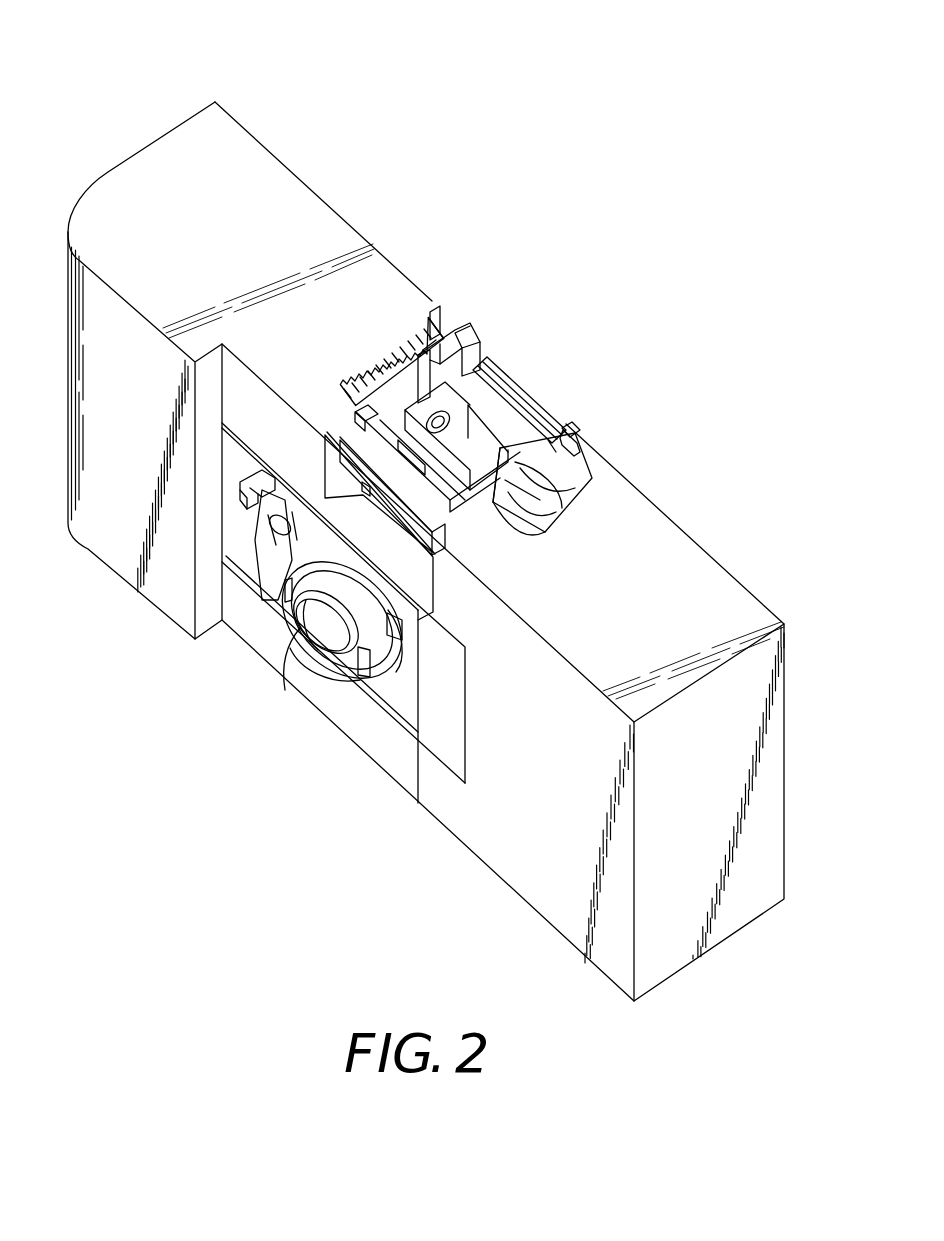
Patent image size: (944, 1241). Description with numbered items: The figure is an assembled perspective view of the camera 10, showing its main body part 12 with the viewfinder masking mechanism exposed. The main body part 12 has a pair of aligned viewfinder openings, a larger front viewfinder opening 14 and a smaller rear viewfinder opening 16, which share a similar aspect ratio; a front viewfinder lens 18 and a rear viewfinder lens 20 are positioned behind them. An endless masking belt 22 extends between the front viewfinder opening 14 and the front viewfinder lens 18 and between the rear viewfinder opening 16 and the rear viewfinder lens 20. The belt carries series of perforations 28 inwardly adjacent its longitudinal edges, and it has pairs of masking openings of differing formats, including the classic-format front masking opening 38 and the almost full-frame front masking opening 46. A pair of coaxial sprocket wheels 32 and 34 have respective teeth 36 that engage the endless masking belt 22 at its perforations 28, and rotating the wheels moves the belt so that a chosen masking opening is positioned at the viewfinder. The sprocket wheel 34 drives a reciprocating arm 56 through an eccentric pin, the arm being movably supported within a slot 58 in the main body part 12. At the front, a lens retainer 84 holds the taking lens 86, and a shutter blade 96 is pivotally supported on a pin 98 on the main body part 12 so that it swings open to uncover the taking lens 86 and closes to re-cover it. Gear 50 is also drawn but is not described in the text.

The camera 10 is at (192, 78).
The main body part 12 is at (150, 145).
The front viewfinder opening 14 is at (342, 470).
The rear viewfinder opening 16 is at (485, 362).
The front viewfinder lens 18 is at (412, 448).
The rear viewfinder lens 20 is at (499, 413).
The endless masking belt 22 is at (357, 437).
The perforations 28 is at (358, 420).
The sprocket wheel 32 is at (466, 330).
The sprocket wheel 34 is at (590, 440).
The teeth 36 is at (434, 310).
The front masking opening 38 is at (432, 545).
The front masking opening 46 is at (498, 405).
The gear 50 is at (400, 322).
The reciprocating arm 56 is at (589, 473).
The slot 58 is at (529, 527).
The lens retainer 84 is at (340, 672).
The taking lens 86 is at (303, 635).
The shutter blade 96 is at (282, 540).
The pin 98 is at (270, 527).